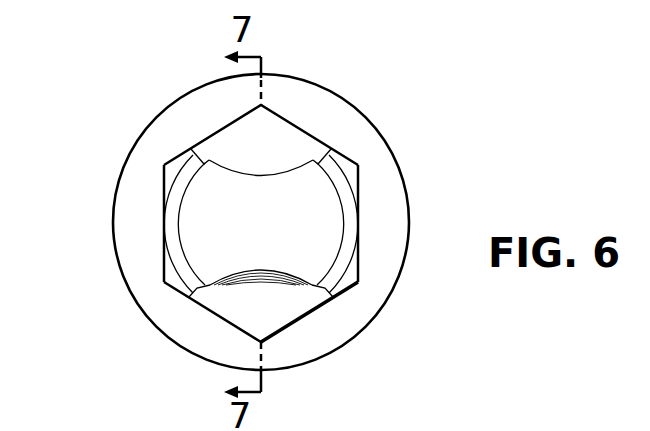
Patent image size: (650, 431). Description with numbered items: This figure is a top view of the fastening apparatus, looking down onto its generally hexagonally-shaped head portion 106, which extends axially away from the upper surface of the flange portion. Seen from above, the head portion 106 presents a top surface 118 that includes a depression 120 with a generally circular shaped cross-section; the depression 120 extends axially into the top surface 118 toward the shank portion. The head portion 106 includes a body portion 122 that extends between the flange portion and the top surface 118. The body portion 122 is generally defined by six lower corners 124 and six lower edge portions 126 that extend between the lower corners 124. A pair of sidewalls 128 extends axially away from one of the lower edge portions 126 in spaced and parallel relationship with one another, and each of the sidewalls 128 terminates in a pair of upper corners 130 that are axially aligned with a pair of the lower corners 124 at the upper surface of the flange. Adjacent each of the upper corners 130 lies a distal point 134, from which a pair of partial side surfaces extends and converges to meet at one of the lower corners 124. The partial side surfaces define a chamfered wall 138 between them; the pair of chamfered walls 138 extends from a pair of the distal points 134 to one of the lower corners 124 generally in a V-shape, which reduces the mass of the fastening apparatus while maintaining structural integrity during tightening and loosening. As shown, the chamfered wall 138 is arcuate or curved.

The head portion 106 is at (137, 188).
The top surface 118 is at (333, 170).
The depression 120 is at (302, 175).
The body portion 122 is at (150, 303).
The lower corners 124 is at (358, 283).
The lower edge portions 126 is at (213, 312).
The sidewalls 128 is at (358, 220).
The upper corners 130 is at (165, 165).
The distal point 134 is at (347, 281).
The chamfered wall 138 is at (270, 140).